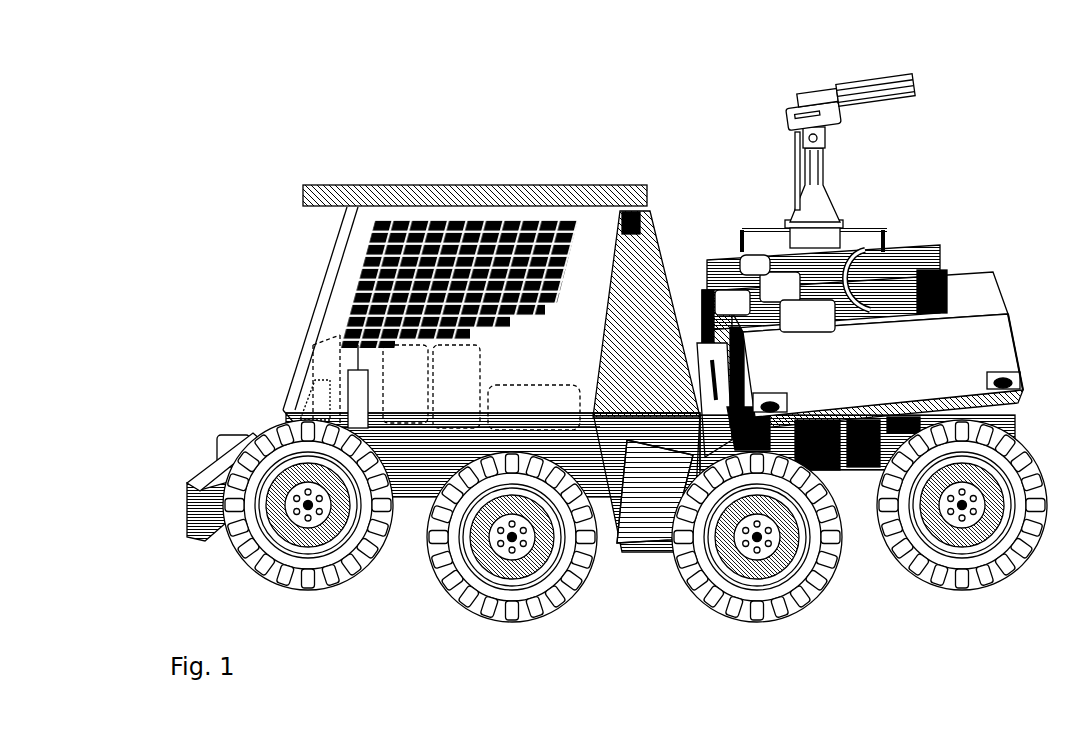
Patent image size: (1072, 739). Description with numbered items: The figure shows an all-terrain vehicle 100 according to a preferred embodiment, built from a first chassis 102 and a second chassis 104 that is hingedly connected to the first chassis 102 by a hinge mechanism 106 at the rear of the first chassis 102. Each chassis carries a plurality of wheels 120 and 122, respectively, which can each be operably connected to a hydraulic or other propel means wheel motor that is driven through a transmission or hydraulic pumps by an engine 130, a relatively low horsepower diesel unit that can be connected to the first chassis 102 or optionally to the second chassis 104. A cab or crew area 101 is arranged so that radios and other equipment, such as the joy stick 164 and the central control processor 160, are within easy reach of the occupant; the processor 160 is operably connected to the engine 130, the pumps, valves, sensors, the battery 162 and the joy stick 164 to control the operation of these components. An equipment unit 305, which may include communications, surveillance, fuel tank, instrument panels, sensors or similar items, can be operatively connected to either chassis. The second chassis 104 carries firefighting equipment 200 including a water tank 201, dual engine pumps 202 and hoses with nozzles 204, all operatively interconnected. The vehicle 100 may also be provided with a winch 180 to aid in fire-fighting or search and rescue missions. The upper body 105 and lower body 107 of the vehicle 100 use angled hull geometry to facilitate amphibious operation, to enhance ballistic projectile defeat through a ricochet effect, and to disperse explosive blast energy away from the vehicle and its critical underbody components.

The all-terrain vehicle 100 is at (312, 120).
The cab or crew area 101 is at (408, 225).
The first chassis 102 is at (317, 185).
The second chassis 104 is at (1027, 383).
The upper body 105 is at (677, 347).
The hinge mechanism 106 is at (655, 503).
The lower body 107 is at (512, 559).
The wheels 120 is at (410, 543).
The wheels 122 is at (950, 592).
The engine 130 is at (537, 385).
The central control processor 160 is at (400, 385).
The battery 162 is at (452, 385).
The joy stick 164 is at (323, 360).
The winch 180 is at (230, 424).
The firefighting equipment 200 is at (872, 256).
The water tank 201 is at (900, 348).
The dual engine pumps 202 is at (783, 320).
The hoses with nozzles 204 is at (852, 102).
The equipment unit 305 is at (348, 307).